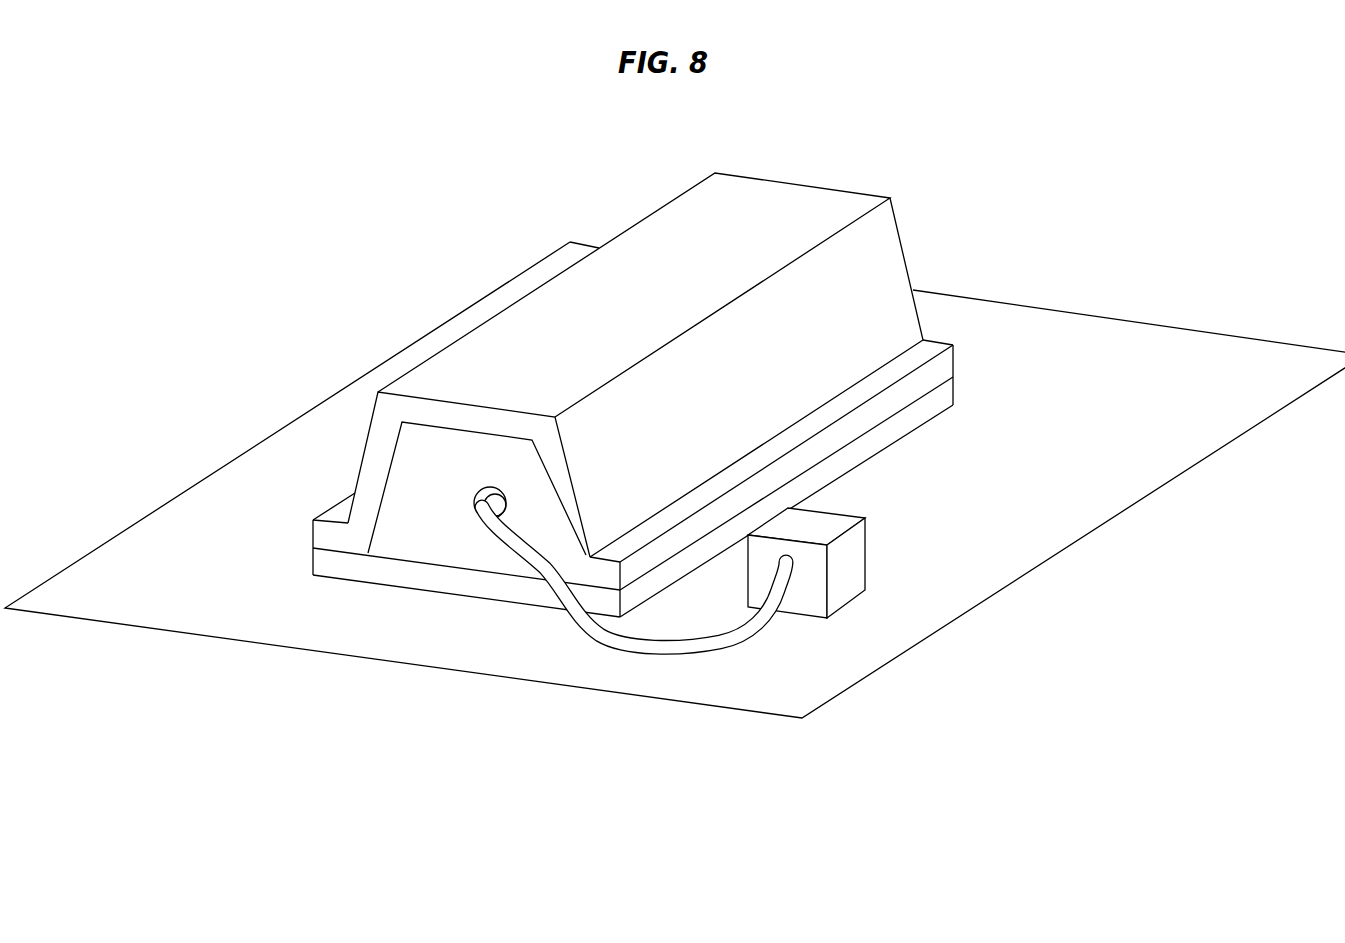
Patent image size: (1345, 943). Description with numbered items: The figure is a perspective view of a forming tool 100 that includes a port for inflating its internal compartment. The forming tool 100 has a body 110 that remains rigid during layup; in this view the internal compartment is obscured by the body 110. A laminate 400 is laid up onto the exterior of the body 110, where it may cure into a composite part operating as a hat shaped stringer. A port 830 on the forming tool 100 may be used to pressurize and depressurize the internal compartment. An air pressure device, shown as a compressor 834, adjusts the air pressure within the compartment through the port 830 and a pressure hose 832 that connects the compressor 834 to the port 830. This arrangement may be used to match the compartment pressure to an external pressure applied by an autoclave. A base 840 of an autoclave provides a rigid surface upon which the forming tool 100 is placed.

The forming tool 100 is at (293, 556).
The body 110 is at (403, 492).
The laminate 400 is at (890, 247).
The port 830 is at (478, 496).
The pressure hose 832 is at (688, 642).
The compressor 834 is at (837, 522).
The base 840 is at (1010, 493).